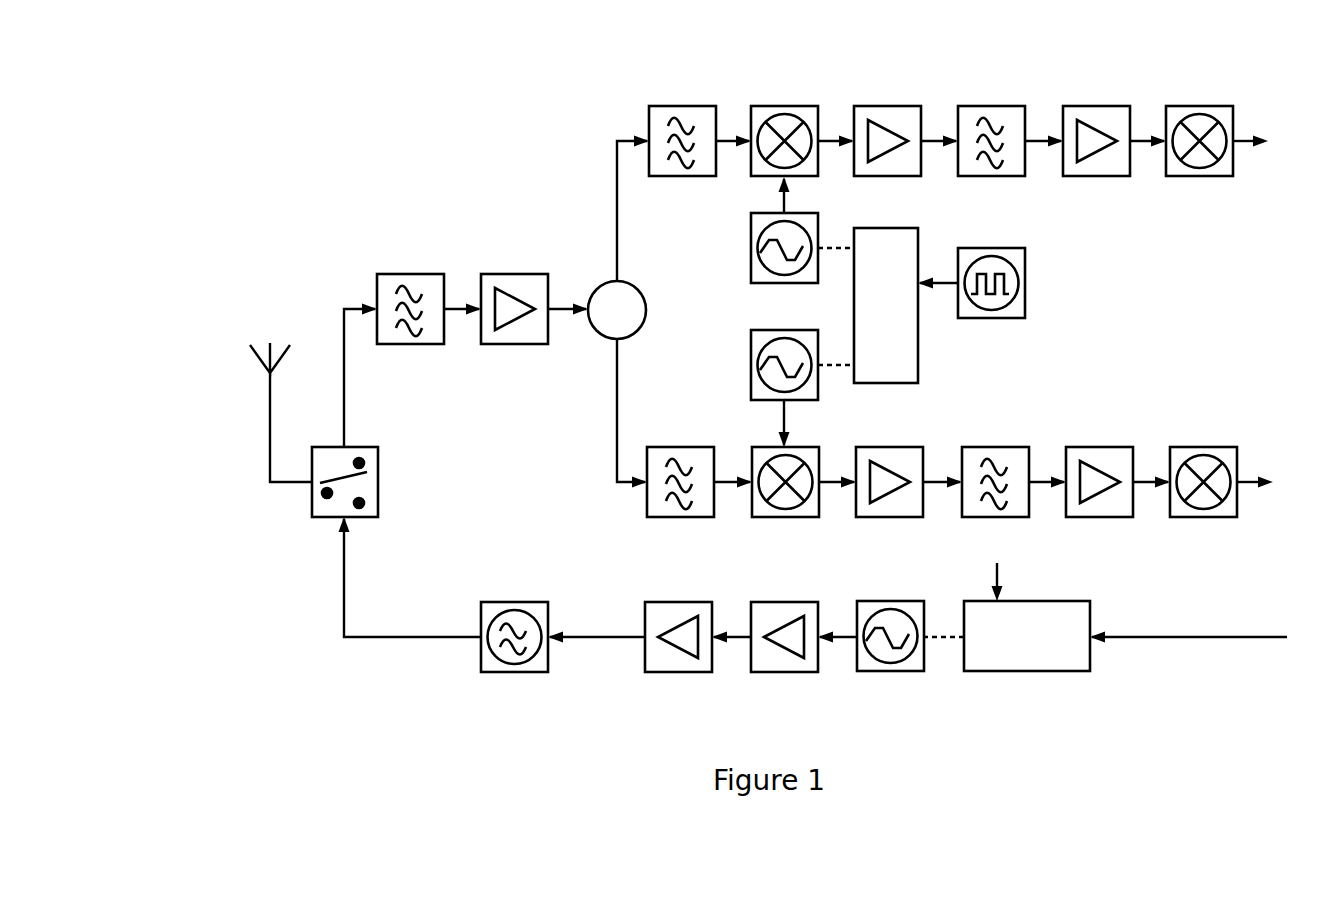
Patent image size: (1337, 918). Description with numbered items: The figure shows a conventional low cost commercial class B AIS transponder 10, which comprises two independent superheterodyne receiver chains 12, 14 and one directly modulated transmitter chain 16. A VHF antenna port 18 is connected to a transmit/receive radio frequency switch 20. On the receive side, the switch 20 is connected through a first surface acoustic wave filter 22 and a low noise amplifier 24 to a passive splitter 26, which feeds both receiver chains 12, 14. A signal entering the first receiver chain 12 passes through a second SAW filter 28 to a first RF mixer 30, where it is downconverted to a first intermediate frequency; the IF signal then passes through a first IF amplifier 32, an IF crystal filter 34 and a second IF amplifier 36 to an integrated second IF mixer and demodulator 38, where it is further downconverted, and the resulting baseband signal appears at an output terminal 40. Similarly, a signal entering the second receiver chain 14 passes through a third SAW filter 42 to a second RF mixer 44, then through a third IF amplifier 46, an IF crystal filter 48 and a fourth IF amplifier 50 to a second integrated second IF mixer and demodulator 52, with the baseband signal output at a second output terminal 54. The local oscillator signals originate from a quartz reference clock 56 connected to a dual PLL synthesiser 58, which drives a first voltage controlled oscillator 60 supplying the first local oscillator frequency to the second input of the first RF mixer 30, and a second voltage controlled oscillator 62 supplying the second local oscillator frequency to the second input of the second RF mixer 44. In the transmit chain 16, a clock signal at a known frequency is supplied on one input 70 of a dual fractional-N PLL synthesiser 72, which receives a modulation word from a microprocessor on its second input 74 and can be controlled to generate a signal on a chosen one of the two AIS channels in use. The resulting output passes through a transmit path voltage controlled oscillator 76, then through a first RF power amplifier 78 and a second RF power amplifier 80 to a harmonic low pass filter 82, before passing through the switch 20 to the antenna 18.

The transponder 10 is at (375, 132).
The first receiver chain 12 is at (876, 62).
The second receiver chain 14 is at (1165, 399).
The transmitter chain 16 is at (953, 717).
The VHF antenna port 18 is at (270, 395).
The transmit/receive radio frequency switch 20 is at (368, 447).
The first surface acoustic wave filter 22 is at (390, 274).
The low noise amplifier 24 is at (498, 274).
The passive splitter 26 is at (635, 289).
The second SAW filter 28 is at (708, 106).
The first RF mixer 30 is at (810, 106).
The first IF amplifier 32 is at (911, 106).
The IF crystal filter 34 is at (1014, 106).
The second IF amplifier 36 is at (1117, 106).
The integrated second IF mixer and demodulator 38 is at (1222, 106).
The output terminal 40 is at (1246, 144).
The third SAW filter 42 is at (668, 447).
The second RF mixer 44 is at (762, 447).
The third IF amplifier 46 is at (875, 447).
The IF crystal filter 48 is at (982, 447).
The fourth IF amplifier 50 is at (1085, 447).
The second integrated second IF mixer and demodulator 52 is at (1190, 447).
The second output terminal 54 is at (1255, 485).
The quartz reference clock 56 is at (1008, 248).
The dual PLL synthesiser 58 is at (897, 228).
The first voltage controlled oscillator 60 is at (751, 221).
The second voltage controlled oscillator 62 is at (751, 338).
The input 70 is at (1202, 636).
The dual fractional-N PLL synthesiser 72 is at (1082, 601).
The second input 74 is at (997, 568).
The transmit path voltage controlled oscillator 76 is at (918, 601).
The first RF power amplifier 78 is at (807, 602).
The second RF power amplifier 80 is at (702, 602).
The harmonic low pass filter 82 is at (537, 602).